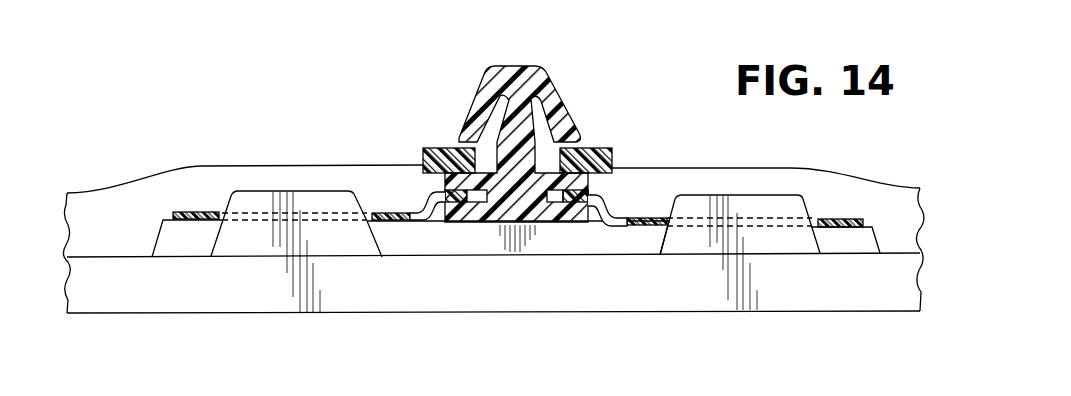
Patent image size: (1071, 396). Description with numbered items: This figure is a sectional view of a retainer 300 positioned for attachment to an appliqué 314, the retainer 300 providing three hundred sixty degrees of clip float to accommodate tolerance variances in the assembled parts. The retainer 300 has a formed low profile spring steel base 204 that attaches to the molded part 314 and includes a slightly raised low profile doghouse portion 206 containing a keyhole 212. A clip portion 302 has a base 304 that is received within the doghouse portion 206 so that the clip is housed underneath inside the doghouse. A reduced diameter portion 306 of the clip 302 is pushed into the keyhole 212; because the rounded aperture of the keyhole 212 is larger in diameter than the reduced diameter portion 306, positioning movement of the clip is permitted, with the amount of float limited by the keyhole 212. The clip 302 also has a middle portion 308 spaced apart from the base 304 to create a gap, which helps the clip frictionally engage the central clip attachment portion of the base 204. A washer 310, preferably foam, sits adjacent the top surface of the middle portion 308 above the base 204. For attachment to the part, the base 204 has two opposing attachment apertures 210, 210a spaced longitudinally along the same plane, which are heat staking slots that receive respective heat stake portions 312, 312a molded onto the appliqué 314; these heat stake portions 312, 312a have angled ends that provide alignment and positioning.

The retainer 300 is at (166, 92).
The clip portion 302 is at (513, 66).
The low profile doghouse portion 206 is at (410, 165).
The washer 310 is at (595, 148).
The middle portion 308 is at (627, 172).
The heat stake rib 312 is at (745, 194).
The heat stake portion 312a is at (312, 190).
The base 204 is at (855, 215).
The attachment aperture 210 is at (812, 221).
The attachment aperture 210a is at (222, 216).
The reduced diameter portion 306 is at (448, 223).
The base of clip portion 304 is at (591, 208).
The keyhole 212 is at (547, 210).
The appliqué 314 is at (158, 301).